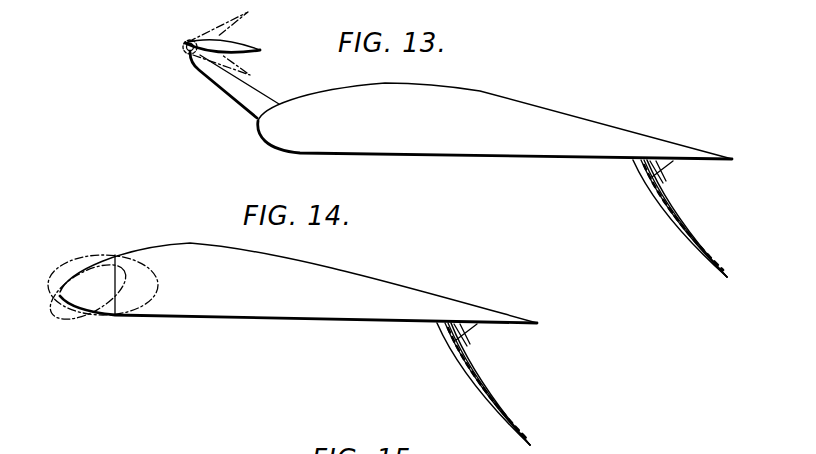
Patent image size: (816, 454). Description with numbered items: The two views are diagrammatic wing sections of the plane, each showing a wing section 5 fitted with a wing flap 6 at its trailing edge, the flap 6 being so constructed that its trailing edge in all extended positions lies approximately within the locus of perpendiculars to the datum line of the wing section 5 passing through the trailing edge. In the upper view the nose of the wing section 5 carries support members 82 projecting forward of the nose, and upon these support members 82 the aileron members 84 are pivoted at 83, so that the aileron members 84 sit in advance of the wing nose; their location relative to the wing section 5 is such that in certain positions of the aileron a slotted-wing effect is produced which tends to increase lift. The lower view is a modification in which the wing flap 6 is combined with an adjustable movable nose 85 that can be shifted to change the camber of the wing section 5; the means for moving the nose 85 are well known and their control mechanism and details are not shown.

In FIG. 13, the wing section 5 is at (488, 97).
In FIG. 14, the wing section 5 is at (317, 266).
In FIG. 13, the wing flap 6 is at (672, 225).
In FIG. 14, the wing flap 6 is at (470, 387).
In FIG. 13, the support members 82 is at (261, 100).
In FIG. 13, the pivot 83 is at (186, 51).
In FIG. 13, the aileron members 84 is at (253, 45).
In FIG. 14, the movable nose 85 is at (64, 297).